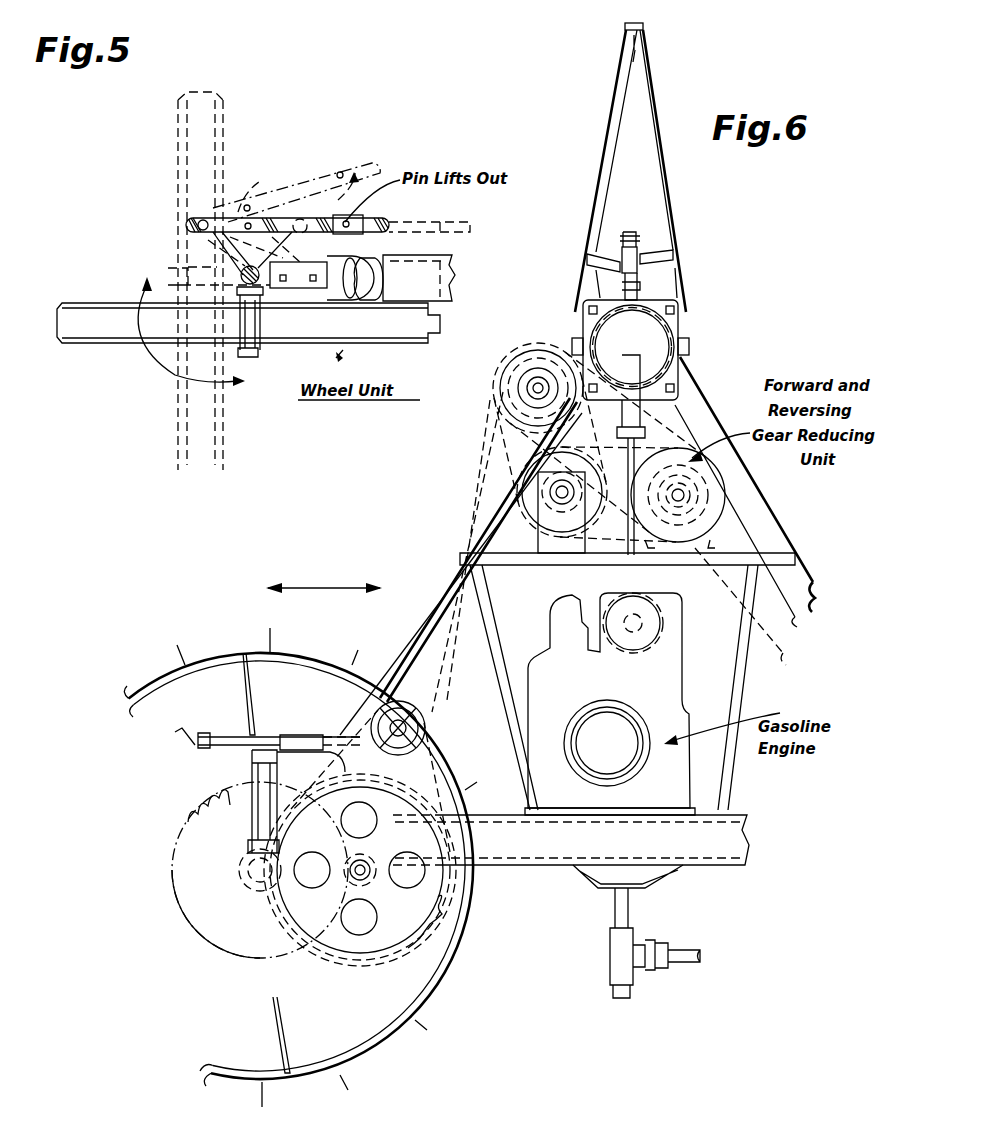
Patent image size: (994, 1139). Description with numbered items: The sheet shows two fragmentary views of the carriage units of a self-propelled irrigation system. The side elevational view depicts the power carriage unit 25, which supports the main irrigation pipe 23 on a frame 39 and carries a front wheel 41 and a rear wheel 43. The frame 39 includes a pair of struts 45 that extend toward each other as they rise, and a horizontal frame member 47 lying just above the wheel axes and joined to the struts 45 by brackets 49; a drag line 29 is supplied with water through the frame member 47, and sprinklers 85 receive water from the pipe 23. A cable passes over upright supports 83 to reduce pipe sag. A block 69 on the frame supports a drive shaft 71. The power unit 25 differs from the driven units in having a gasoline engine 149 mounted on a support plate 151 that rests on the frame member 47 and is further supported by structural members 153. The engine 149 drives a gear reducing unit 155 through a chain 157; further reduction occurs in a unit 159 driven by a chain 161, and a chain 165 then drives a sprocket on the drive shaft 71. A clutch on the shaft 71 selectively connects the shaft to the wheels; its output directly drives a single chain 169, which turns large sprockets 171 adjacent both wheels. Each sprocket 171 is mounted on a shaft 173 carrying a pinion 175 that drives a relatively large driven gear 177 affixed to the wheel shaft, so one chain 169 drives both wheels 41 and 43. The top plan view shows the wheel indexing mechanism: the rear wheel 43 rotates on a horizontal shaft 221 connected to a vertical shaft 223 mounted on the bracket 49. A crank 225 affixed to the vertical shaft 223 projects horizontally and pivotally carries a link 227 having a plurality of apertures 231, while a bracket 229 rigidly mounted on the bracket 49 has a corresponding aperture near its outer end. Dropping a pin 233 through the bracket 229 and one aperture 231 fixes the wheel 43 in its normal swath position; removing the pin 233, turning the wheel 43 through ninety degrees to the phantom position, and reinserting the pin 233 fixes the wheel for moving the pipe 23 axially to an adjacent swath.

In FIG. 6, the main irrigation pipe 23 is at (658, 327).
In FIG. 6, the power carriage unit 25 is at (319, 575).
In FIG. 6, the drag line 29 is at (639, 972).
In FIG. 6, the frame 39 is at (705, 392).
In FIG. 6, the front wheel 41 is at (163, 672).
In FIG. 5, the rear wheel 43 is at (204, 82).
In FIG. 5, the struts 45 is at (423, 280).
In FIG. 6, the struts 45 is at (762, 526).
In FIG. 6, the horizontal frame member 47 is at (715, 852).
In FIG. 5, the brackets 49 is at (261, 298).
In FIG. 6, the block 69 is at (566, 337).
In FIG. 6, the drive shaft 71 is at (538, 383).
In FIG. 6, the upright supports 83 is at (607, 210).
In FIG. 6, the sprinklers 85 is at (672, 257).
In FIG. 6, the gasoline engine 149 is at (660, 709).
In FIG. 6, the support plate 151 is at (700, 807).
In FIG. 6, the structural members 153 is at (480, 612).
In FIG. 6, the gear reducing unit 155 is at (720, 500).
In FIG. 6, the chain 157 is at (683, 583).
In FIG. 6, the speed reduction unit 159 is at (552, 522).
In FIG. 6, the chain 161 is at (596, 570).
In FIG. 6, the chain 165 is at (512, 442).
In FIG. 6, the chain 169 is at (447, 675).
In FIG. 6, the large sprockets 171 is at (398, 945).
In FIG. 6, the shafts 173 is at (350, 880).
In FIG. 6, the pinion 175 is at (405, 888).
In FIG. 6, the driven gear 177 is at (188, 812).
In FIG. 5, the horizontal shaft 221 is at (177, 257).
In FIG. 5, the vertical shaft 223 is at (258, 288).
In FIG. 5, the crank 225 is at (230, 246).
In FIG. 5, the link 227 is at (389, 226).
In FIG. 5, the bracket 229 is at (333, 240).
In FIG. 5, the apertures 231 is at (345, 215).
In FIG. 5, the pin 233 is at (352, 232).